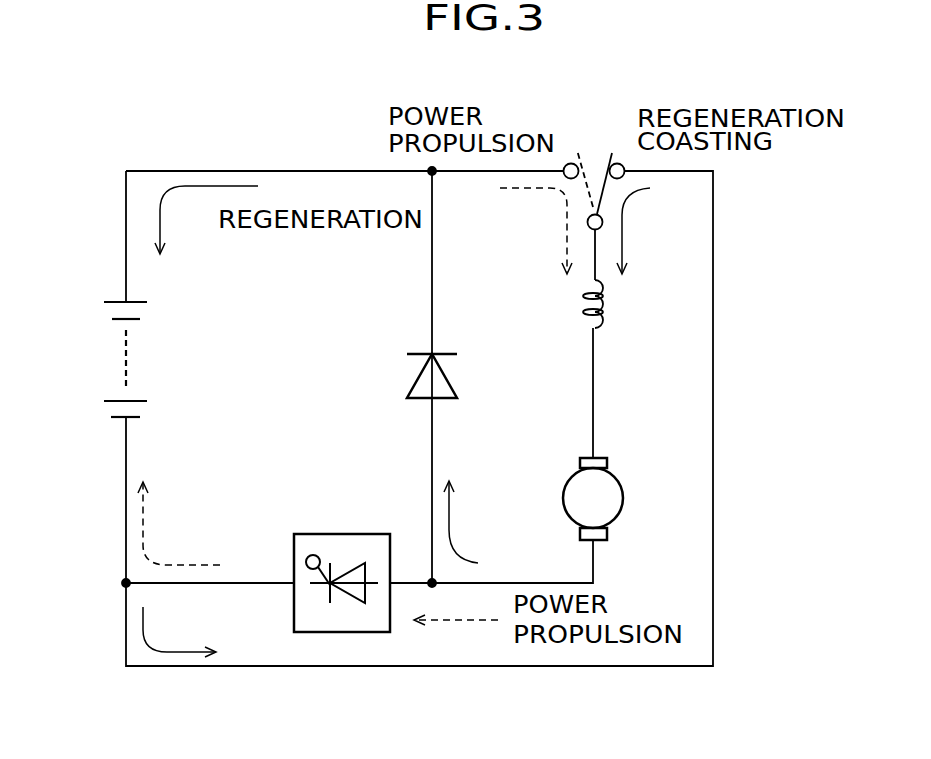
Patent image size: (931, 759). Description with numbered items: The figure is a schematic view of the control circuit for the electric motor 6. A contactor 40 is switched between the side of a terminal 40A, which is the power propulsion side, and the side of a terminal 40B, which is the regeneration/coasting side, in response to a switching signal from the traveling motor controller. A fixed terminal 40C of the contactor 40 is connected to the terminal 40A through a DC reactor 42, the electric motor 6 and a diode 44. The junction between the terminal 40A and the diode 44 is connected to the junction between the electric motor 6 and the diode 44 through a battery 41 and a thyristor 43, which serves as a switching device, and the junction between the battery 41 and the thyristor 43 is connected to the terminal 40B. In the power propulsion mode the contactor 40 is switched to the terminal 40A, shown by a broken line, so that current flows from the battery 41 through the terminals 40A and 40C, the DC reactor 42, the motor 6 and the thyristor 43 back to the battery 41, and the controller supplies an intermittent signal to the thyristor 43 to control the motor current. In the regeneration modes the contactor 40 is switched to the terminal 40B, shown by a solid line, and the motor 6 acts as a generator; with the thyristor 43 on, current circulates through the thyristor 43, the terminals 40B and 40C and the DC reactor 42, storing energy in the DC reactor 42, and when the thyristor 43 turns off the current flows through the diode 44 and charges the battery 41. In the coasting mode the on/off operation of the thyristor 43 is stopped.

The electric motor 6 is at (568, 472).
The contactor 40 is at (632, 170).
The terminal 40A is at (566, 178).
The terminal 40B is at (628, 173).
The fixed terminal 40C is at (603, 222).
The battery 41 is at (140, 411).
The DC reactor 42 is at (593, 323).
The thyristor 43 is at (347, 534).
The diode 44 is at (413, 352).